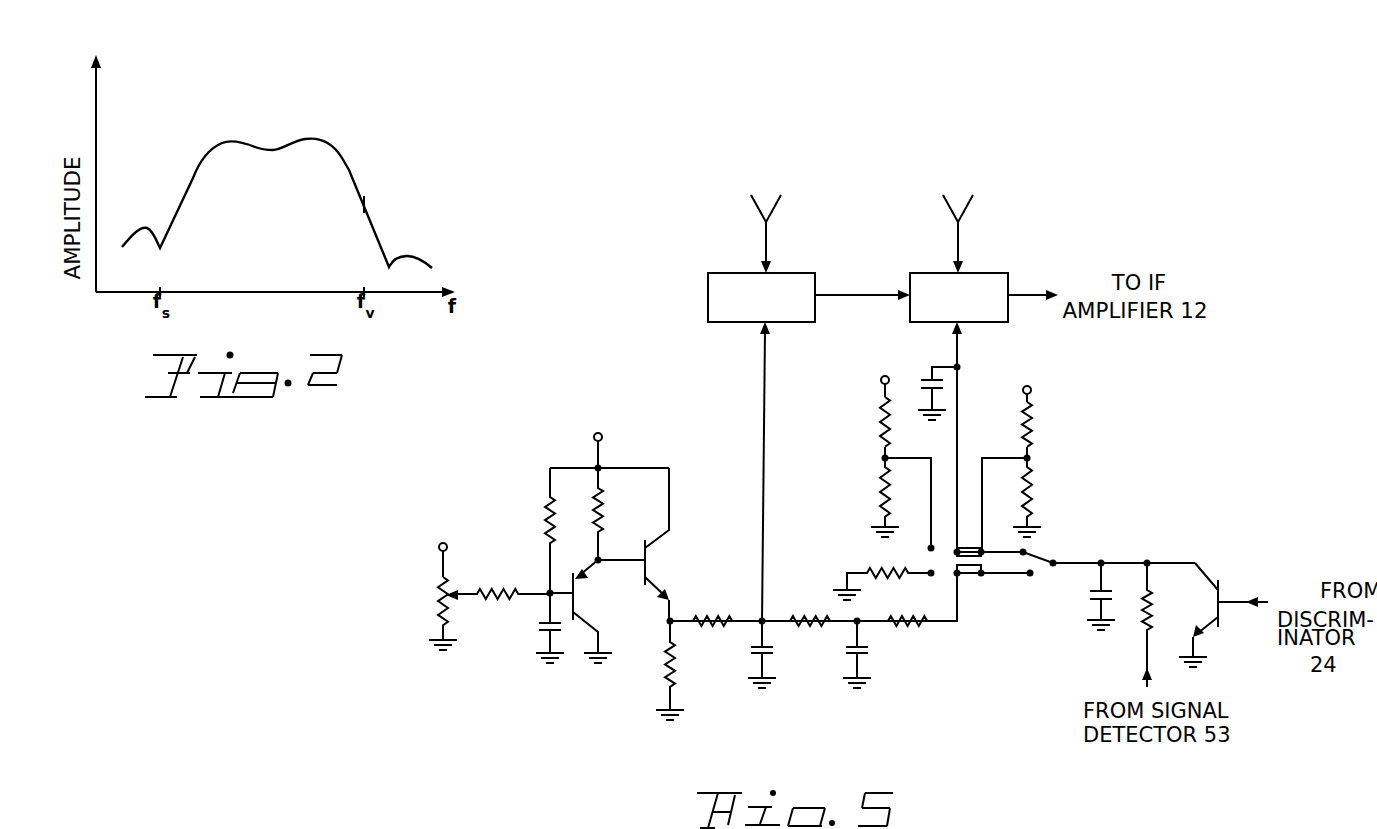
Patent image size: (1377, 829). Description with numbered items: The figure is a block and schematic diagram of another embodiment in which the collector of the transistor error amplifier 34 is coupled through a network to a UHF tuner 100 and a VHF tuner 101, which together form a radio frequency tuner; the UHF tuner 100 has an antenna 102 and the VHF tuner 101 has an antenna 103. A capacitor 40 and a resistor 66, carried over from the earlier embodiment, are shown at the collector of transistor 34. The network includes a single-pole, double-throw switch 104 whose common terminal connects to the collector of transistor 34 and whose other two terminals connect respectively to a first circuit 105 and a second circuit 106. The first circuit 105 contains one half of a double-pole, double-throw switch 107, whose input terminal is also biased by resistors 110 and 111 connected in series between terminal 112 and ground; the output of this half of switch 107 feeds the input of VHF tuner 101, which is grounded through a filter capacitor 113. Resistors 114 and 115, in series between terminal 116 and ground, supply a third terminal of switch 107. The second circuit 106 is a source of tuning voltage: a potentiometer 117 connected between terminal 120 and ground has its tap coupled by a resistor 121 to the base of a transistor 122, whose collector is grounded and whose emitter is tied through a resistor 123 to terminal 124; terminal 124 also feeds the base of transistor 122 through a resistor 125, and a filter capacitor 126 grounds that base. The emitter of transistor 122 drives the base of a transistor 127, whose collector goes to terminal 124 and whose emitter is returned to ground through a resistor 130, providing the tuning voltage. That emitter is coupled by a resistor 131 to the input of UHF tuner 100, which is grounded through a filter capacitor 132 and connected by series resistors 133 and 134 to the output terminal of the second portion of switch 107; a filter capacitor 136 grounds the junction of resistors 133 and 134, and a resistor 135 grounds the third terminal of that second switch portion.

The UHF tuner 100 is at (722, 271).
The VHF tuner 101 is at (918, 271).
The antenna 102 is at (779, 200).
The antenna 103 is at (970, 207).
The single-pole, double-throw switch 104 is at (1041, 574).
The first circuit 105 is at (1041, 362).
The second circuit 106 is at (947, 688).
The double-pole, double-throw switch 107 is at (966, 578).
The resistor 110 is at (1032, 428).
The resistor 111 is at (1031, 492).
The terminal 112 is at (1022, 391).
The filter capacitor 113 is at (930, 372).
The resistor 114 is at (880, 426).
The resistor 115 is at (880, 492).
The terminal 116 is at (880, 381).
The potentiometer 117 is at (437, 601).
The terminal 120 is at (448, 548).
The resistor 121 is at (497, 598).
The transistor 122 is at (620, 609).
The resistor 123 is at (606, 508).
The terminal 124 is at (603, 438).
The resistor 125 is at (542, 514).
The filter capacitor 126 is at (540, 633).
The transistor 127 is at (658, 576).
The resistor 130 is at (680, 665).
The resistor 131 is at (714, 617).
The filter capacitor 132 is at (774, 655).
The resistor 133 is at (798, 617).
The resistor 134 is at (916, 614).
The resistor 135 is at (878, 568).
The filter capacitor 136 is at (865, 654).
The capacitor 40 is at (1110, 586).
The resistor 66 is at (1142, 630).
The error amplifier 34 is at (1207, 621).